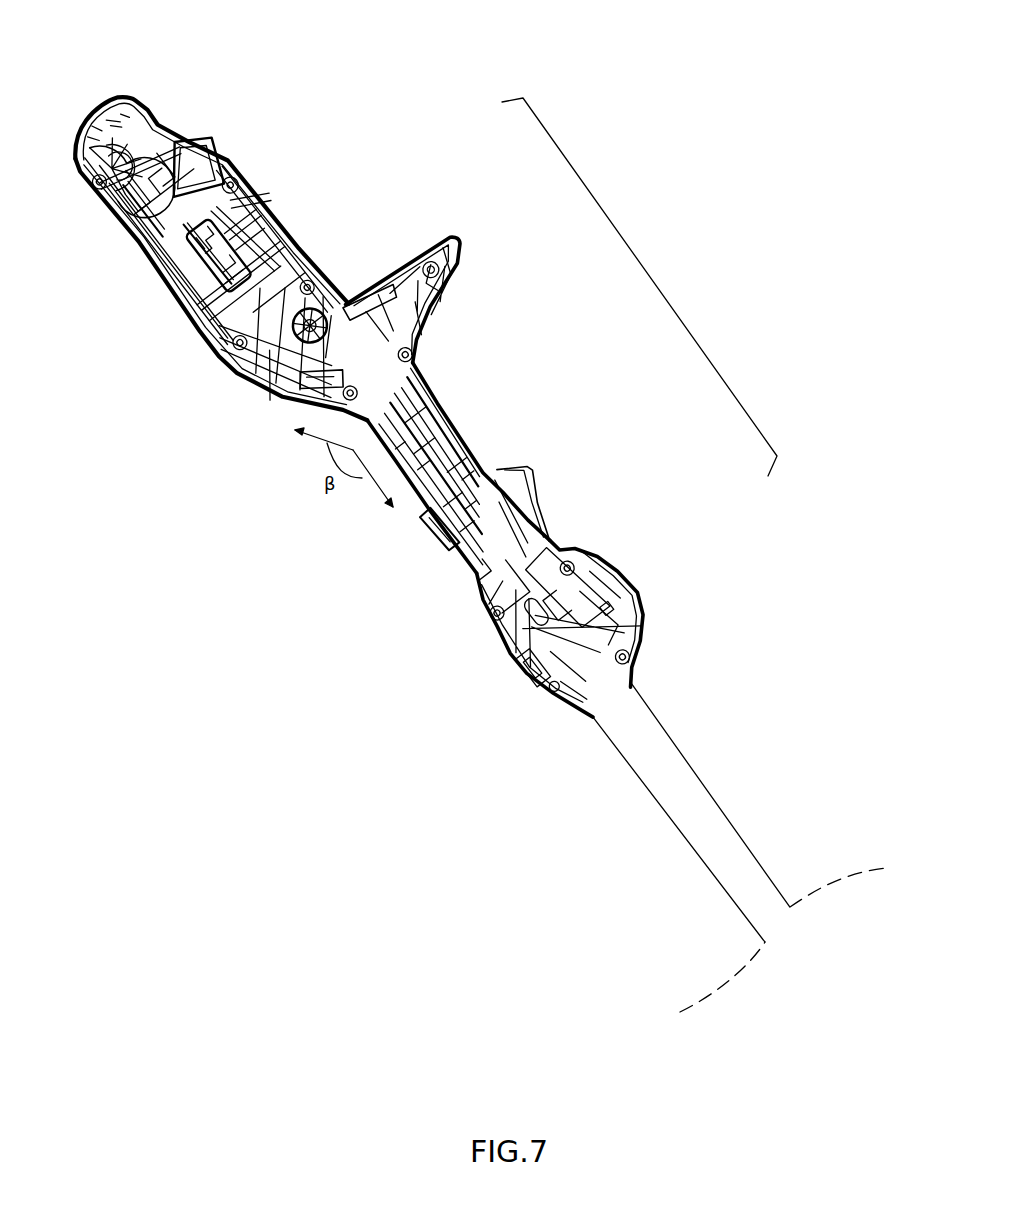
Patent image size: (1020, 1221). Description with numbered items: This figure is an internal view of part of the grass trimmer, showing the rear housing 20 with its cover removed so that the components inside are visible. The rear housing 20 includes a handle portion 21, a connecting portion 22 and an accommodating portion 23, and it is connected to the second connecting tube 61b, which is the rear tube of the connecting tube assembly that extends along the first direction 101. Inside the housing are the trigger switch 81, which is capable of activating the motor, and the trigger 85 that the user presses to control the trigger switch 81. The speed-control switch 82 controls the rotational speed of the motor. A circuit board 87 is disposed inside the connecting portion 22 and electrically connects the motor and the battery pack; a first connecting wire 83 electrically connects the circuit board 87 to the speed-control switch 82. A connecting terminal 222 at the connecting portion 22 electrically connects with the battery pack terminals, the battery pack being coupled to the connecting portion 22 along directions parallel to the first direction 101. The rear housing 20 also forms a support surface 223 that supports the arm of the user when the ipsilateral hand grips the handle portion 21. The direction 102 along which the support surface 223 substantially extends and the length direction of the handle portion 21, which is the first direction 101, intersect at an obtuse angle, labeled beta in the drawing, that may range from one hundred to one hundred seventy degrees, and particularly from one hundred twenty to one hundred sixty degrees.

The rear housing 20 is at (652, 276).
The handle portion 21 is at (455, 410).
The connecting portion 22 is at (270, 192).
The accommodating portion 23 is at (625, 566).
The connecting terminal 222 is at (207, 133).
The support surface 223 is at (277, 395).
The circuit board 87 is at (173, 278).
The first connecting wire 83 is at (453, 552).
The trigger 85 is at (480, 567).
The speed-control switch 82 is at (525, 677).
The trigger switch 81 is at (538, 693).
The second connecting tube 61b is at (733, 822).
The first direction 101 is at (365, 487).
The direction 102 is at (315, 444).